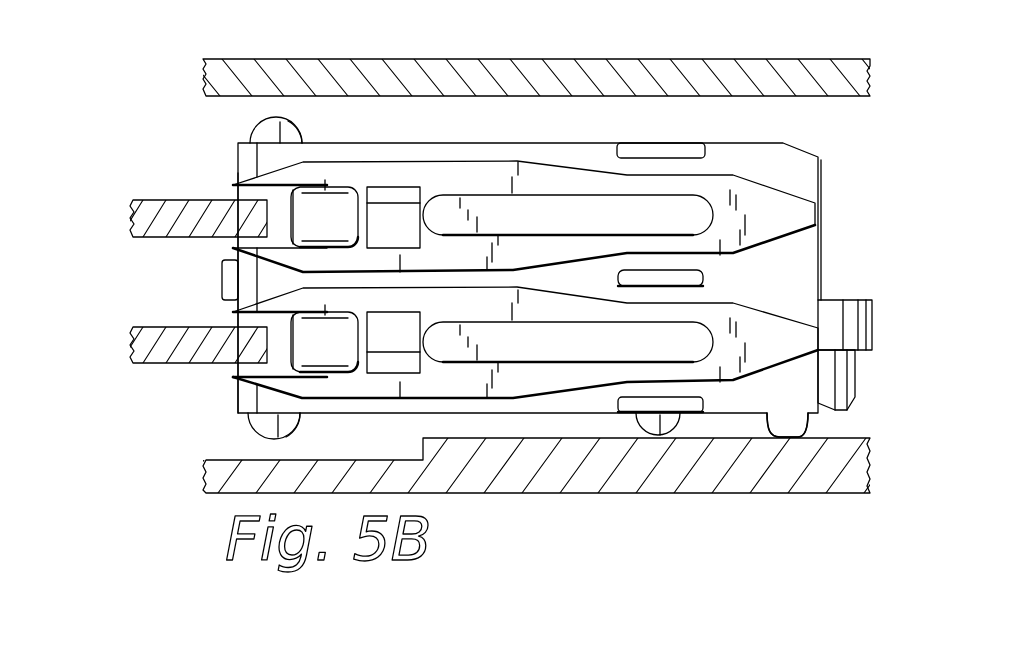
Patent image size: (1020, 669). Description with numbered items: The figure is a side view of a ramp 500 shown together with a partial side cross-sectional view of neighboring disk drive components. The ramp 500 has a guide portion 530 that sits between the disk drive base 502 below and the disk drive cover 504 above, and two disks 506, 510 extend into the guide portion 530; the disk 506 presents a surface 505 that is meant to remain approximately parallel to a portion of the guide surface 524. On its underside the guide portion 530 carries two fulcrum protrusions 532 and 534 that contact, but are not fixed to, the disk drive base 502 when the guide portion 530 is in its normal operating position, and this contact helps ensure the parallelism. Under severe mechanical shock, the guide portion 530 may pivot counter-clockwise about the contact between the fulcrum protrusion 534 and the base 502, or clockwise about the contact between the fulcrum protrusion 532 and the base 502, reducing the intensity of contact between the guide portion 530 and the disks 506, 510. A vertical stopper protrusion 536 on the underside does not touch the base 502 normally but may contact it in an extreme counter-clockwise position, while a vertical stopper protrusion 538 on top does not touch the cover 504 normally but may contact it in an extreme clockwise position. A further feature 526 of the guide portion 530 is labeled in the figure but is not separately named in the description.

The ramp 500 is at (483, 294).
The disk drive base 502 is at (748, 494).
The disk drive cover 504 is at (392, 59).
The surface 505 is at (171, 253).
The disk 506 is at (132, 208).
The disk 510 is at (133, 352).
The guide surface 524 is at (415, 143).
The contact beam 526 is at (673, 175).
The guide portion 530 is at (808, 264).
The fulcrum protrusion 532 is at (802, 427).
The fulcrum protrusion 534 is at (655, 428).
The vertical stopper protrusion 536 is at (262, 428).
The vertical stopper protrusion 538 is at (260, 128).